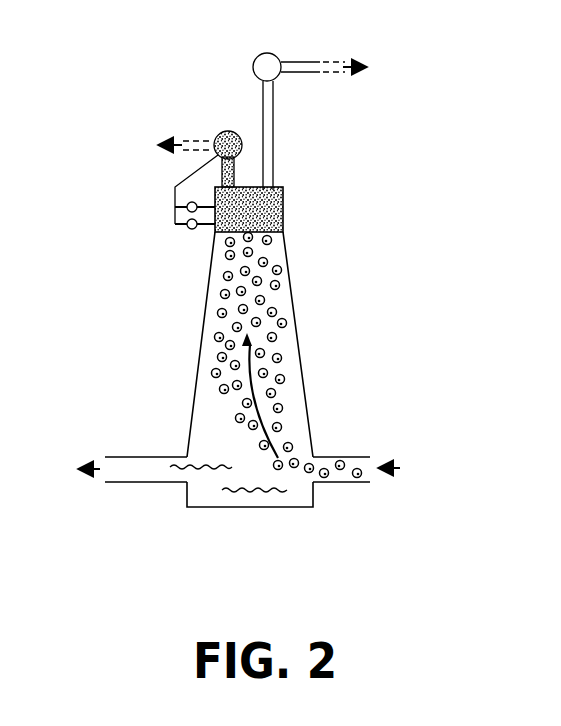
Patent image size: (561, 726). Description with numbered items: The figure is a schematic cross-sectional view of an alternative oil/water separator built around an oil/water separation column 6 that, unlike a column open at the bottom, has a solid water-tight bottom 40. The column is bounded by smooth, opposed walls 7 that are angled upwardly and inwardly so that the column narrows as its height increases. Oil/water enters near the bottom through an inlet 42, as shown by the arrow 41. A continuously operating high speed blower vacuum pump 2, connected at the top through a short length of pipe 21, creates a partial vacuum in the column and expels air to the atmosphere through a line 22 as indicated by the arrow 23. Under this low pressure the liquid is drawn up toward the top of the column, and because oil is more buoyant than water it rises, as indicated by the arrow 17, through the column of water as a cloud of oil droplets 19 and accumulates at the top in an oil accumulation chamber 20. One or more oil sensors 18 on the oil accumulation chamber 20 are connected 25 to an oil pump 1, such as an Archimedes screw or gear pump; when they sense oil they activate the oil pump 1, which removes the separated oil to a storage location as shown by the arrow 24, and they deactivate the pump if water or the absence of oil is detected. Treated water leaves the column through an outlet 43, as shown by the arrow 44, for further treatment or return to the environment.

The oil pump 1 is at (227, 143).
The vacuum pump 2 is at (267, 67).
The oil/water separation column 6 is at (206, 390).
The walls 7 is at (293, 297).
The arrow 17 is at (254, 364).
The oil sensors 18 is at (190, 229).
The gas bubbles 19 is at (277, 262).
The oil accumulation chamber 20 is at (283, 222).
The pipe 21 is at (268, 122).
The outlet line 22 is at (313, 63).
The arrow 23 is at (353, 66).
The arrow 24 is at (168, 145).
The connection 25 is at (175, 217).
The bottom 40 is at (267, 510).
The arrow 41 is at (390, 468).
The inlet 42 is at (340, 483).
The outlet 43 is at (158, 488).
The arrow 44 is at (90, 468).